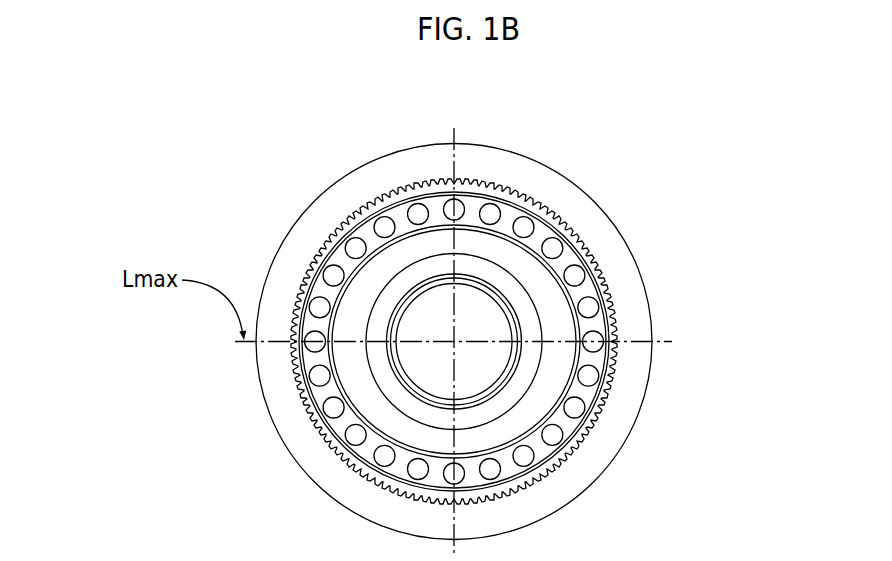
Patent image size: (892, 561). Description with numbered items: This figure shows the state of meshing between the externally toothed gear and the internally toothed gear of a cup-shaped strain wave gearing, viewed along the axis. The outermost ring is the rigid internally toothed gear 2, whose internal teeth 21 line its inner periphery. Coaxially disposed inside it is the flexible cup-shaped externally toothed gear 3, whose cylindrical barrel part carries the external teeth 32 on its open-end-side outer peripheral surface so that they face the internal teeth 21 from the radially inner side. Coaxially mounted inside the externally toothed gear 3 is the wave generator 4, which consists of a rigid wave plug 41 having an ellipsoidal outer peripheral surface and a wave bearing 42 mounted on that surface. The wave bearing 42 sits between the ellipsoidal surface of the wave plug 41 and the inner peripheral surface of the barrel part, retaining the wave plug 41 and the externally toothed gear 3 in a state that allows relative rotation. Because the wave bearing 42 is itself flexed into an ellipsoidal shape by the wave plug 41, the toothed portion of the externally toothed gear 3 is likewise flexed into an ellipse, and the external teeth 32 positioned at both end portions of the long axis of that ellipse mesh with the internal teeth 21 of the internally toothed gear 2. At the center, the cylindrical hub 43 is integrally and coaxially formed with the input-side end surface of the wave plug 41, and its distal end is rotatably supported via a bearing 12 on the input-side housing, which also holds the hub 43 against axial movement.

The rigid internally toothed gear 2 is at (283, 252).
The internal teeth 21 is at (353, 211).
The flexible cup-shaped externally toothed gear 3 is at (438, 285).
The external teeth 32 is at (377, 199).
The wave generator 4 is at (497, 305).
The rigid wave plug 41 is at (600, 286).
The wave bearing 42 is at (555, 310).
The cylindrical hub 43 is at (498, 278).
The bearing 12 is at (495, 392).